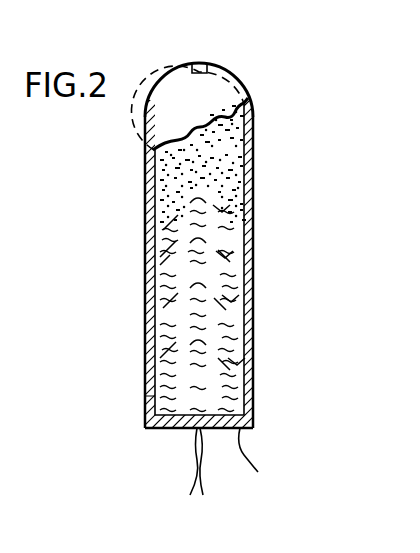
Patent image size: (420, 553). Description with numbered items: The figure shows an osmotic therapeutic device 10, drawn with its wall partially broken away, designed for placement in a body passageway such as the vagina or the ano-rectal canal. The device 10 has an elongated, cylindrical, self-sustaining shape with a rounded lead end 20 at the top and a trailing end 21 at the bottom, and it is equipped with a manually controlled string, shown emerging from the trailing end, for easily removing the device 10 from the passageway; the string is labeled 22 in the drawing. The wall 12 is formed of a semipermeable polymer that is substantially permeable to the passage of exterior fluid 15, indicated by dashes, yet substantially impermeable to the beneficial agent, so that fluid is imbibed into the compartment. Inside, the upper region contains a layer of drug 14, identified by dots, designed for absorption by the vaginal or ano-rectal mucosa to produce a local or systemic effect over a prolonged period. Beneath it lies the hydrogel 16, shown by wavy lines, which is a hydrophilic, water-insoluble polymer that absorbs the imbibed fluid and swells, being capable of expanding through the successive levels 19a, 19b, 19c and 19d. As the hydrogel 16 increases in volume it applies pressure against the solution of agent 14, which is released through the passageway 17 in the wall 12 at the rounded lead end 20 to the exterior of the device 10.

The osmotic device 10 is at (122, 293).
The wall 12 is at (148, 396).
The beneficial agent 14 is at (237, 138).
The exterior fluid 15 is at (230, 183).
The hydrogel 16 is at (250, 398).
The passageway 17 is at (204, 62).
The hydrogel expansion level a 19a is at (237, 365).
The hydrogel expansion level b 19b is at (231, 302).
The hydrogel expansion level c 19c is at (225, 258).
The hydrogel expansion level d 19d is at (222, 212).
The rounded lead end 20 is at (228, 72).
The trailing end 21 is at (264, 458).
The lead wires 22 is at (192, 472).